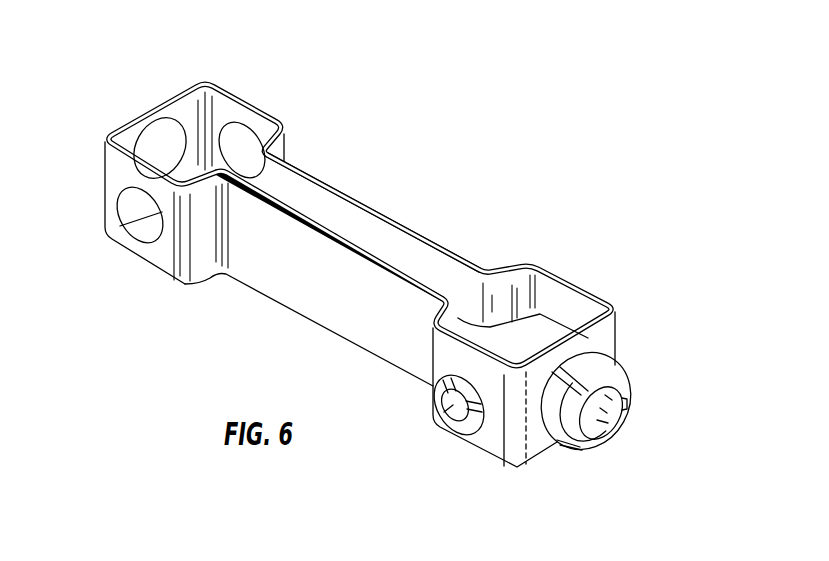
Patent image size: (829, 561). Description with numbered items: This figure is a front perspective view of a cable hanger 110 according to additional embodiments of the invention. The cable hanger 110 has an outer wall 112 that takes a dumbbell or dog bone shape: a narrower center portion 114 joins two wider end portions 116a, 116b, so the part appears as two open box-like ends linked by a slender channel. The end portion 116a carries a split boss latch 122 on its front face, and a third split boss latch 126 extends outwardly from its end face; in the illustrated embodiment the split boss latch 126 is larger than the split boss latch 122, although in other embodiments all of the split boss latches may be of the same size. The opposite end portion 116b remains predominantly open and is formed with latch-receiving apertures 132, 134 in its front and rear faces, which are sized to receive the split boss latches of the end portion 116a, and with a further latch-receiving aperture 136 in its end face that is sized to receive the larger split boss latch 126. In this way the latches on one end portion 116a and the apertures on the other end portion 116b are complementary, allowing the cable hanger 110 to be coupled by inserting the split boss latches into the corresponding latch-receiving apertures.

The cable hanger 110 is at (678, 268).
The outer wall 112 is at (237, 282).
The center portion 114 is at (428, 228).
The end portion 116a is at (605, 268).
The end portion 116b is at (267, 95).
The split boss latch 122 is at (453, 407).
The third split boss latch 126 is at (615, 424).
The latch-receiving aperture 132 is at (145, 230).
The latch-receiving aperture 134 is at (243, 140).
The latch-receiving aperture 136 is at (162, 143).